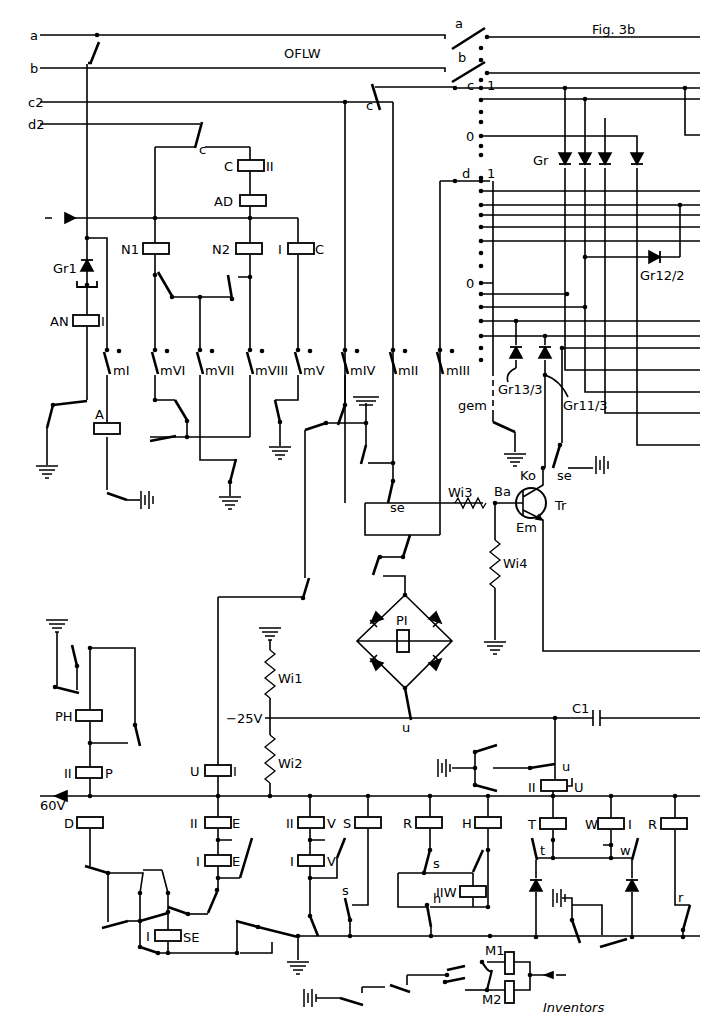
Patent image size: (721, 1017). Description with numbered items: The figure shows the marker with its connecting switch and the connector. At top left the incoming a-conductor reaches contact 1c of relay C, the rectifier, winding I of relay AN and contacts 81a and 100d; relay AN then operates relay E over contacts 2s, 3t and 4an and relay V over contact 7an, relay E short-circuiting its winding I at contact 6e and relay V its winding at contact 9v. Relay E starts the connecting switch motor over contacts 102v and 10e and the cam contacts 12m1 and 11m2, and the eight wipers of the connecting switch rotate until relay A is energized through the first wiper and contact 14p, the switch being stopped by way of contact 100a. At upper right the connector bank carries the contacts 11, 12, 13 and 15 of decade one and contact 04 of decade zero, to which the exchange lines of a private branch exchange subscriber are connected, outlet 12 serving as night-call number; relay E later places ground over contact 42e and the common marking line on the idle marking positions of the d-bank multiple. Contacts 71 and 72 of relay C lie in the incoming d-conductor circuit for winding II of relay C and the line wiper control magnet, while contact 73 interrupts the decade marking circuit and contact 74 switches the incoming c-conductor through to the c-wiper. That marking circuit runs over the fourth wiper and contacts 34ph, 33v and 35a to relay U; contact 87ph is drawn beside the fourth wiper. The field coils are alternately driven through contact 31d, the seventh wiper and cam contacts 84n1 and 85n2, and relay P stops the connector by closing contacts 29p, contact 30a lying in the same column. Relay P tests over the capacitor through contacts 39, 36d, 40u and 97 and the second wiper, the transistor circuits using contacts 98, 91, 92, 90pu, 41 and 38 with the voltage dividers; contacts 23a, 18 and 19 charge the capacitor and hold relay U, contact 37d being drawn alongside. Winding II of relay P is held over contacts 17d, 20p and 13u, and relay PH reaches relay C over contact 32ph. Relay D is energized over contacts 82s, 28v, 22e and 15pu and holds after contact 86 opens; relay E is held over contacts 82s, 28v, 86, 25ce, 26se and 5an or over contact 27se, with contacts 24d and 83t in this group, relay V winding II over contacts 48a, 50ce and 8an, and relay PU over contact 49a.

The contact of relay C 1c is at (101, 52).
The contact 71 is at (190, 135).
The contact of relay C 72 is at (215, 135).
The contact of relay C 73 is at (385, 97).
The contact of relay C 74 is at (356, 94).
The bank contact 11 is at (582, 191).
The bank contact 12 is at (576, 227).
The bank contact 13 is at (581, 216).
The bank contact 15 is at (581, 241).
The bank contact 04 is at (466, 335).
The contact of relay E 42e is at (496, 444).
The contact of relay A 81a is at (69, 396).
The contact of relay D 100d is at (59, 441).
The cam contact 84n1 is at (177, 278).
The cam contact 85n2 is at (212, 287).
The contact of relay P 14p is at (130, 493).
The contact 30a is at (171, 404).
The contacts of relay P 29p is at (169, 449).
The contact of relay D 31d is at (224, 476).
The contact of relay PH 32ph is at (278, 404).
The contact of relay V 33v is at (288, 445).
The contact of relay PH 34ph is at (318, 491).
The contact 87ph is at (346, 423).
The contact of relay PU 90pu is at (367, 462).
The contact of relay SE 97 is at (383, 491).
The contact of relay SE 98 is at (408, 489).
The contact of relay U 40u is at (394, 539).
The contact of relay U 41 is at (420, 527).
The contact of relay D 36d is at (385, 575).
The contact of relay U 38 is at (398, 704).
The contact of relay U 39 is at (421, 708).
The contact of relay SE 91 is at (552, 463).
The contact of relay SE 92 is at (588, 469).
The contact of relay A 35a is at (263, 671).
The contact of relay P 20p is at (86, 649).
The contact of relay D 17d is at (66, 681).
The contact of relay U 13u is at (123, 734).
The contact of relay A 23a is at (499, 755).
The contact 37d is at (499, 782).
The contact of relay U 18 is at (551, 749).
The contact of relay U 19 is at (564, 782).
The contact of relay PU 15pu is at (79, 889).
The contact 24d is at (139, 875).
The contact of relay D 86 is at (152, 859).
The contact of relay E 22e is at (122, 917).
The contact of relay SE 27se is at (156, 912).
The contact of relay CE 25ce is at (186, 879).
The contact of relay SE 26se is at (186, 904).
The contact of relay V 28v is at (181, 958).
The contact 83t is at (224, 936).
The contact of relay S 82s is at (256, 946).
The contact of relay AN 4an is at (215, 901).
The contact of relay AN 5an is at (212, 921).
The contact of relay T 3t is at (248, 916).
The contact of relay S 2s is at (278, 926).
The contact of relay E 6e is at (253, 852).
The contact of relay V 9v is at (336, 842).
The contact of relay AN 8an is at (326, 925).
The contact of relay AN 7an is at (307, 954).
The contact of relay A 48a is at (579, 908).
The contact of relay CE 50ce is at (560, 931).
The contact of relay A 49a is at (615, 933).
The contact of relay A 100a is at (473, 967).
The cam contact 12m1 is at (436, 962).
The cam contact 11m2 is at (459, 989).
The contact of relay E 10e is at (386, 981).
The contact of relay V 102v is at (333, 993).